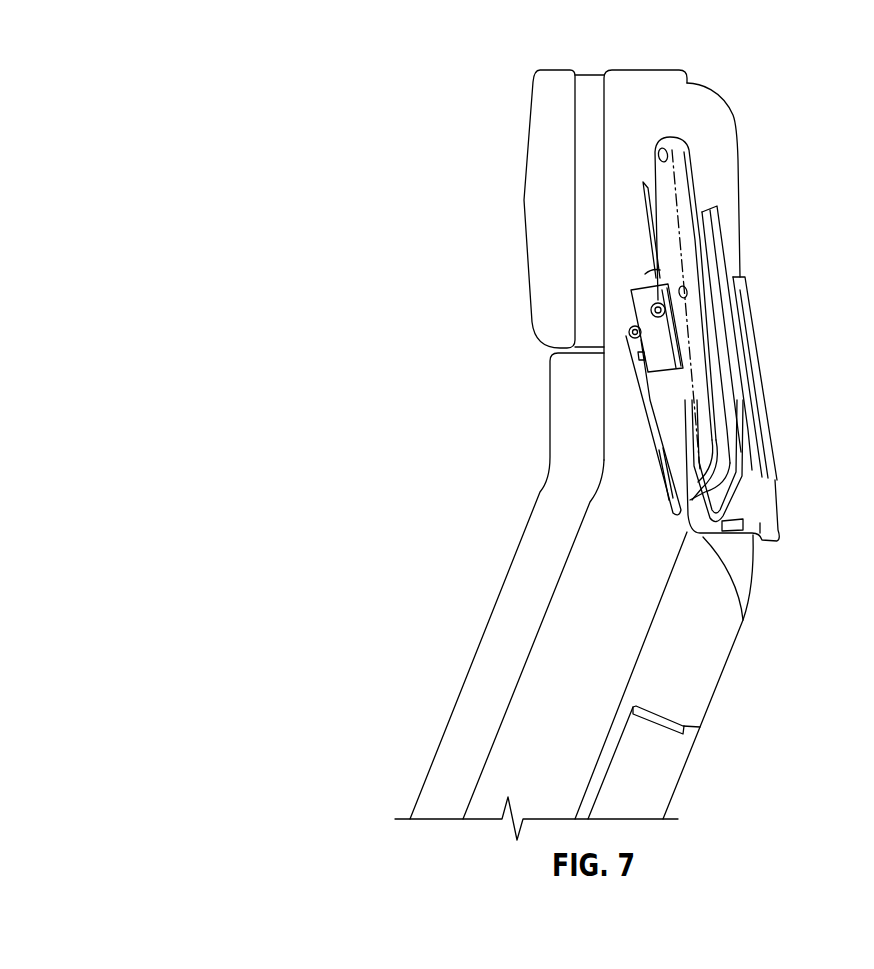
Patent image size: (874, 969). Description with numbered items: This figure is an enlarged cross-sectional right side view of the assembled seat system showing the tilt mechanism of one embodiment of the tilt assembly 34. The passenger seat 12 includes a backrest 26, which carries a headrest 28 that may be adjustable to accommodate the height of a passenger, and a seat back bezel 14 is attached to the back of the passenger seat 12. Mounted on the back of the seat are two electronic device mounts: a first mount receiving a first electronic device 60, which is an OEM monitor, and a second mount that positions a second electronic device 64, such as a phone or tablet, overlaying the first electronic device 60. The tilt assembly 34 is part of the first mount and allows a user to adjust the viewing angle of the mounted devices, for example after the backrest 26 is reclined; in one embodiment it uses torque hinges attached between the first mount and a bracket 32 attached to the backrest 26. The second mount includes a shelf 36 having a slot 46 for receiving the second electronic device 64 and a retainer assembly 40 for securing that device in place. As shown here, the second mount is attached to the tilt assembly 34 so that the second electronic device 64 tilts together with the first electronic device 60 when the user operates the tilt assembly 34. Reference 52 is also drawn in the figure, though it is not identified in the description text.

The passenger seat 12 is at (360, 125).
The seat back bezel 14 is at (707, 83).
The backrest 26 is at (477, 648).
The headrest 28 is at (523, 168).
The bracket 32 is at (676, 325).
The tilt assembly 34 is at (630, 301).
The shelf 36 is at (765, 502).
The retainer assembly 40 is at (757, 348).
The slot 46 is at (755, 573).
The tab 52 is at (703, 545).
The first electronic device 60 is at (692, 167).
The second electronic device 64 is at (722, 228).